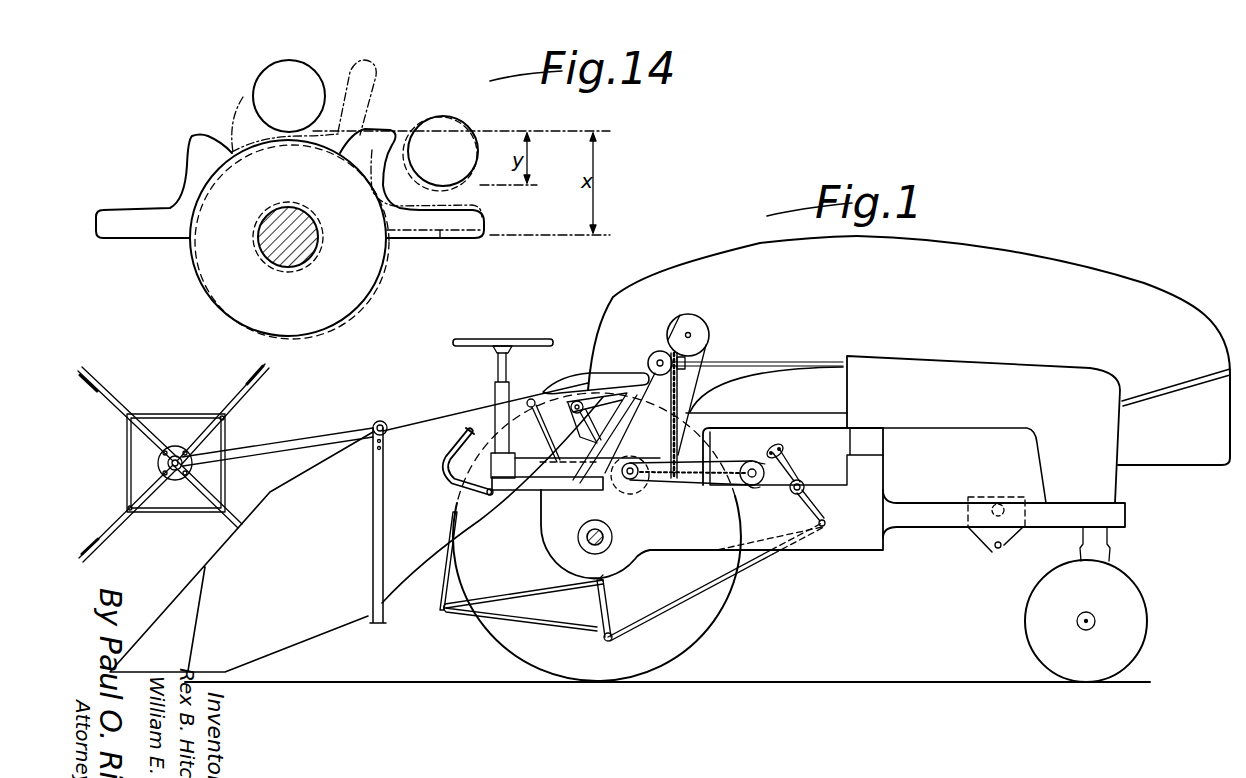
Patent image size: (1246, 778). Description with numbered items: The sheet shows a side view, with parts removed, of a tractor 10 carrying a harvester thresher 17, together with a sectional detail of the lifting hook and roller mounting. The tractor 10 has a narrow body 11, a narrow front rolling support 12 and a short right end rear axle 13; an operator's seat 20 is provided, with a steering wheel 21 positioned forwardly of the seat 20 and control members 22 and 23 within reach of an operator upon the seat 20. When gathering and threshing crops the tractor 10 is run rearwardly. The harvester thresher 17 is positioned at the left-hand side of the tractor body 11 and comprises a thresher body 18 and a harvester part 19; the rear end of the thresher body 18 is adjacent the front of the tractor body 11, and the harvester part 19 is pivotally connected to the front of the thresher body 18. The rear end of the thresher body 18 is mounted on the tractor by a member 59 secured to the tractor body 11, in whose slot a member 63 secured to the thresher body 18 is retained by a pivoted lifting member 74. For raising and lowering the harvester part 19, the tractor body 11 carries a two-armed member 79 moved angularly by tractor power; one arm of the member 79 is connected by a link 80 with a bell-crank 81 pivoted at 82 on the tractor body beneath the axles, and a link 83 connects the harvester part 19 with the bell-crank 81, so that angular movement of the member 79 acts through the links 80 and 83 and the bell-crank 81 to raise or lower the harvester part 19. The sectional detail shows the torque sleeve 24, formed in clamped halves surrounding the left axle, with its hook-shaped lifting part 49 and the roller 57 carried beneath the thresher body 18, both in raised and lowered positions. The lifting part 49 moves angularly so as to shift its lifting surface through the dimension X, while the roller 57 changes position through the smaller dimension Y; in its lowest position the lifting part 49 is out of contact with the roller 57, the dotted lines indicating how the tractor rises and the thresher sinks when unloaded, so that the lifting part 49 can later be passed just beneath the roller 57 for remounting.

In FIG. 1, the tractor 10 is at (934, 361).
In FIG. 1, the tractor body 11 is at (978, 382).
In FIG. 1, the front rolling support 12 is at (1148, 600).
In FIG. 1, the right end rear axle 13 is at (600, 534).
In FIG. 1, the harvester thresher 17 is at (990, 249).
In FIG. 1, the thresher body 18 is at (1038, 283).
In FIG. 1, the harvester part 19 is at (425, 437).
In FIG. 1, the operator's seat 20 is at (608, 375).
In FIG. 1, the steering wheel 21 is at (500, 341).
In FIG. 1, the control member 22 is at (445, 457).
In FIG. 1, the control member 23 is at (534, 398).
In FIG. 14, the torque sleeve 24 is at (384, 289).
In FIG. 14, the lifting part 49 is at (372, 80).
In FIG. 14, the roller 57 is at (257, 73).
In FIG. 1, the member 59 is at (1010, 541).
In FIG. 1, the member 63 is at (971, 536).
In FIG. 1, the lifting member 74 is at (995, 549).
In FIG. 1, the two-armed member 79 is at (785, 459).
In FIG. 1, the link 80 is at (708, 586).
In FIG. 1, the bell-crank 81 is at (531, 594).
In FIG. 1, the pivot 82 is at (618, 579).
In FIG. 1, the link 83 is at (443, 590).